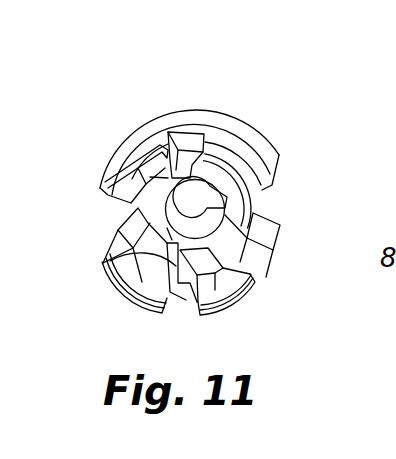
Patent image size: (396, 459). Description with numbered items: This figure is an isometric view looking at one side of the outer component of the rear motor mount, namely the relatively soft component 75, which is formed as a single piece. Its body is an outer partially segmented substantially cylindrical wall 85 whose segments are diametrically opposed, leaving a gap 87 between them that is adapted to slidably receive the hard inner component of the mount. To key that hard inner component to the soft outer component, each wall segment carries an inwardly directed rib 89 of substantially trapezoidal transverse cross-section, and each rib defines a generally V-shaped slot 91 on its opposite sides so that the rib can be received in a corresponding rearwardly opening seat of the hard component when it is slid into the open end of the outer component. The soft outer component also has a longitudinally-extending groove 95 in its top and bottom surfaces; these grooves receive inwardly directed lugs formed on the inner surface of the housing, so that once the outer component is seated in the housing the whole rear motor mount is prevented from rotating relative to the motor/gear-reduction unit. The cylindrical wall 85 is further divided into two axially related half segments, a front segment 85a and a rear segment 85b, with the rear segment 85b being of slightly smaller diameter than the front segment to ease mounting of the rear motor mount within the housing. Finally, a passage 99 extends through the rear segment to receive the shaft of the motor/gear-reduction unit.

The relatively soft component 75 is at (203, 102).
The outer partially segmented substantially cylindrical wall 85 is at (296, 190).
The front half segment 85a is at (247, 165).
The rear half segment 85b is at (233, 132).
The gap 87 is at (118, 212).
The inwardly directed rib 89 is at (114, 173).
The generally V-shaped slot 91 is at (187, 136).
The longitudinally-extending groove 95 is at (190, 140).
The passage 99 is at (200, 222).